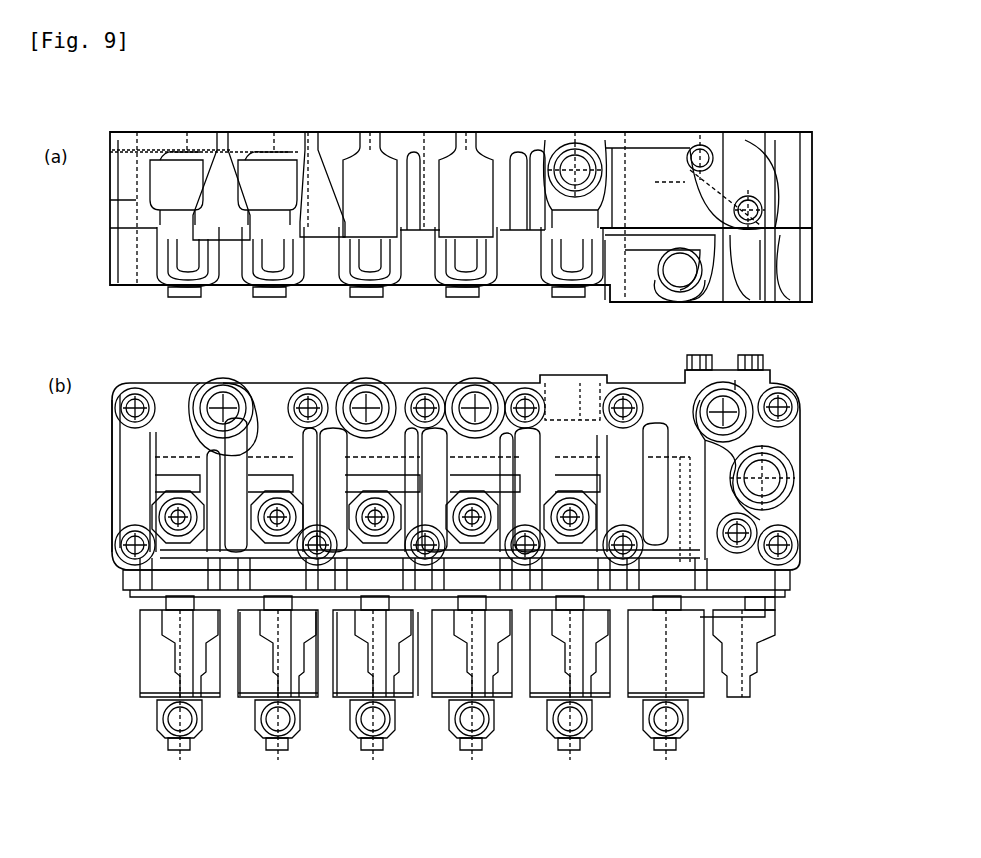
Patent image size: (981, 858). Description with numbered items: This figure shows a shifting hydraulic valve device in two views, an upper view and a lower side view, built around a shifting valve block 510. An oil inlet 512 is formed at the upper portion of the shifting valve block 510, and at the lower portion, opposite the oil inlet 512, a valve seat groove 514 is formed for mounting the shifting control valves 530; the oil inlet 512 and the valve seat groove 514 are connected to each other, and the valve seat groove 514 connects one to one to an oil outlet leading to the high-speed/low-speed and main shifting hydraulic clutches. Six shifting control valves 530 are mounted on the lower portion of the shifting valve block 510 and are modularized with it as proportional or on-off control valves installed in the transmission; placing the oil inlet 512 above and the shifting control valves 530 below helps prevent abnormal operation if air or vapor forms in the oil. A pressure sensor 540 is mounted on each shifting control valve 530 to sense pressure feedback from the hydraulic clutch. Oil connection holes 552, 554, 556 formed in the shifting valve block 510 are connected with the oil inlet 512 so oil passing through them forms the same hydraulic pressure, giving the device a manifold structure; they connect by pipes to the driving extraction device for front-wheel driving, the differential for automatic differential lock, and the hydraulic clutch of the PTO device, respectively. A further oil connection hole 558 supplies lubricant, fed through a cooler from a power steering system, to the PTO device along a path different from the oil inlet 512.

The shifting valve block 510 is at (130, 132).
The oil inlet 512 is at (572, 145).
The valve seat groove 514 is at (112, 492).
The shifting control valve 530 is at (140, 652).
The pressure sensor 540 is at (262, 697).
The oil connection hole 552 is at (222, 405).
The oil connection hole 554 is at (368, 400).
The oil connection hole 556 is at (472, 400).
The oil connection hole 558 is at (722, 395).